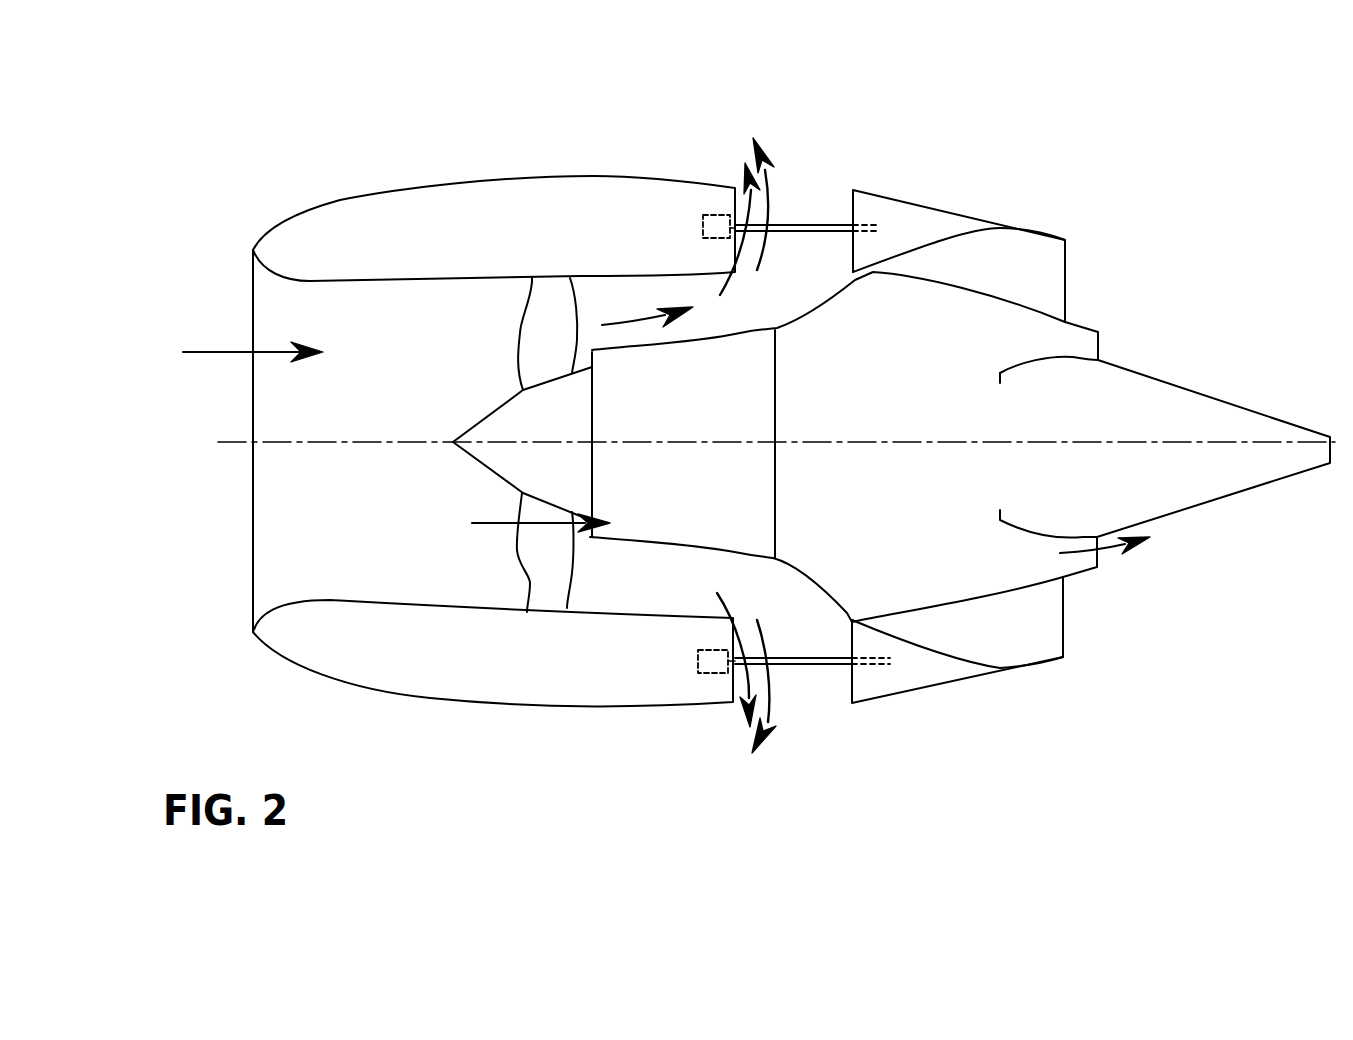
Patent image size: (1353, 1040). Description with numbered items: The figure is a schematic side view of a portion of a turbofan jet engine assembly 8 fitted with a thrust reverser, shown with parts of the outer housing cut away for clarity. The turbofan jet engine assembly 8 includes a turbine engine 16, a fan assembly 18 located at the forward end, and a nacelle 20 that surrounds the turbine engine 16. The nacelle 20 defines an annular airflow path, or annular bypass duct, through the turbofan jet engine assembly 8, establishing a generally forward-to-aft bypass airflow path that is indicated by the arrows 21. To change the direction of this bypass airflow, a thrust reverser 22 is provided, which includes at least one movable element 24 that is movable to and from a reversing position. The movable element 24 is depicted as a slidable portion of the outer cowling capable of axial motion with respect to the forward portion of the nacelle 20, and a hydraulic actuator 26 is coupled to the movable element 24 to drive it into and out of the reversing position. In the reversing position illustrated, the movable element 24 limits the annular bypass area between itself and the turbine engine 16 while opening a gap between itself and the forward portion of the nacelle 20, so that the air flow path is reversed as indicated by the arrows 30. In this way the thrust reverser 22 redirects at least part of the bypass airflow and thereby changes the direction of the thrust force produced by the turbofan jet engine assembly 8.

The turbofan jet engine assembly 8 is at (439, 122).
The nacelle 20 is at (340, 200).
The fan assembly 18 is at (550, 297).
The turbine engine 16 is at (617, 373).
The hydraulic actuator 26 is at (700, 230).
The arrows (reversed airflow path) 30 is at (775, 188).
The thrust reverser 22 is at (802, 218).
The movable element 24 is at (905, 195).
The arrows (bypass airflow path) 21 is at (588, 538).